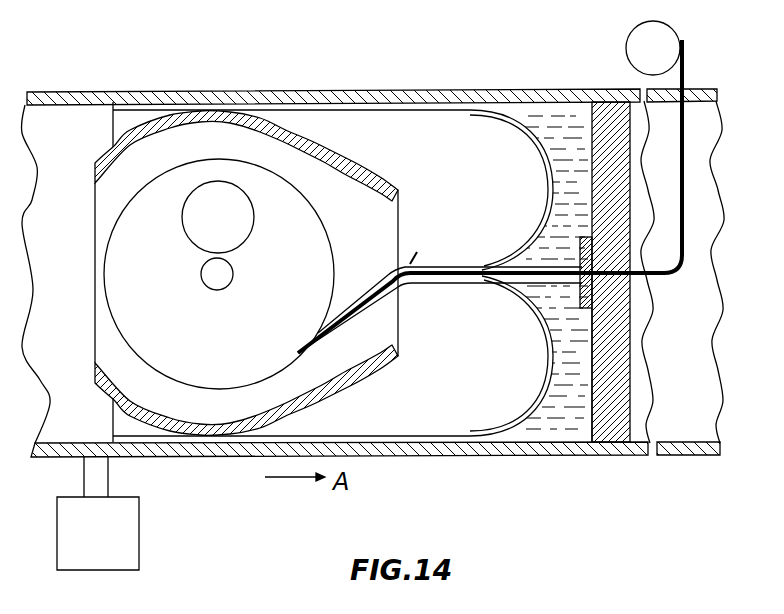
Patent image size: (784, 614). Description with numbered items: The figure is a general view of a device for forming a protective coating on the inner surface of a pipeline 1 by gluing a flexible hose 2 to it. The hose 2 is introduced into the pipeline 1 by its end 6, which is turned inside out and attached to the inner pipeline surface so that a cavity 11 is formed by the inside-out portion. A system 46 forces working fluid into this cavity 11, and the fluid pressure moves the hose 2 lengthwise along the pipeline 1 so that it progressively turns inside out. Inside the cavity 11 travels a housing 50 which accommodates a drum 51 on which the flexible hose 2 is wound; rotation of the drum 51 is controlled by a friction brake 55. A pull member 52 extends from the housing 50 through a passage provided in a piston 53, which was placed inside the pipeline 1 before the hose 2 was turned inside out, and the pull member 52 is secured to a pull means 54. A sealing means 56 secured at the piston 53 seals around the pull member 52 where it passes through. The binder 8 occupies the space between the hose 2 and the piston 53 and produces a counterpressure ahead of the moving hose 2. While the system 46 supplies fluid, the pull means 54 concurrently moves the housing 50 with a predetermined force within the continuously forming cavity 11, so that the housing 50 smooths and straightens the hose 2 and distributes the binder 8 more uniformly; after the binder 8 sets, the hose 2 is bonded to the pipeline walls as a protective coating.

The pipeline 1 is at (307, 95).
The flexible hose 2 is at (502, 437).
The end of the flexible hose 6 is at (115, 128).
The binder 8 is at (560, 123).
The cavity 11 is at (365, 135).
The system 46 is at (118, 533).
The housing 50 is at (318, 147).
The drum 51 is at (205, 372).
The pull member 52 is at (568, 308).
The piston 53 is at (613, 120).
The pull means 54 is at (672, 40).
The friction brake 55 is at (225, 198).
The sealing means 56 is at (593, 310).